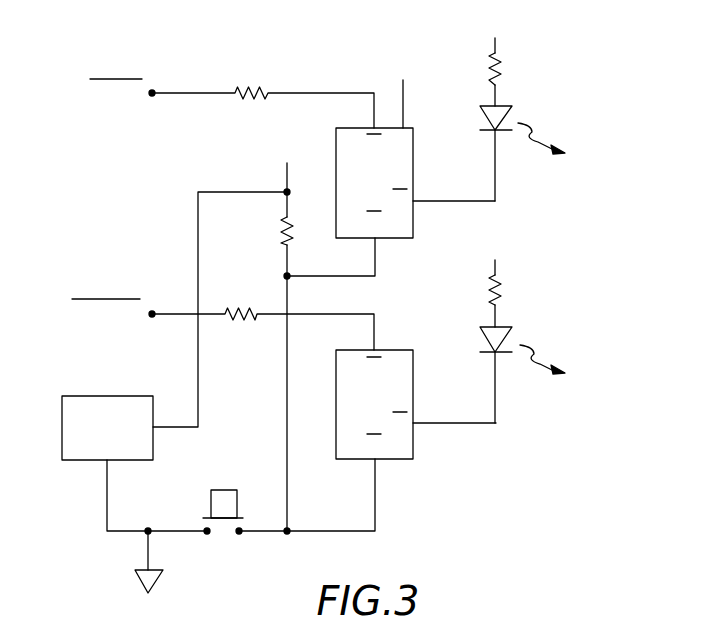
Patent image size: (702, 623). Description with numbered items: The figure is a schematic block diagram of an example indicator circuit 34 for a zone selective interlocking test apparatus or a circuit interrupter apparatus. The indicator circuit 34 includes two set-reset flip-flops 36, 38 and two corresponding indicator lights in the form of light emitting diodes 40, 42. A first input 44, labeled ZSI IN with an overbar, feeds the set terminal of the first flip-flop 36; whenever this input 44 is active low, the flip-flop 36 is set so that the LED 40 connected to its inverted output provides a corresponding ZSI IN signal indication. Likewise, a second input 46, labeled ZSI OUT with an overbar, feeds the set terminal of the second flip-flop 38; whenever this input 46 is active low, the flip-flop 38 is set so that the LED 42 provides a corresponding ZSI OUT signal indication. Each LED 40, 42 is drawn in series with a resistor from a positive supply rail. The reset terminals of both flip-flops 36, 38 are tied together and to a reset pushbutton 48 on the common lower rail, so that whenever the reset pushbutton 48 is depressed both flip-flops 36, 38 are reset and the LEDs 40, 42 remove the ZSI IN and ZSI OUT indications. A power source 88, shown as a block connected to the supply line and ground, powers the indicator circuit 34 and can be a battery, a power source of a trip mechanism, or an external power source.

The indicator circuit 34 is at (538, 514).
The set-reset flip-flop 36 is at (407, 239).
The set-reset flip-flop 38 is at (407, 460).
The light emitting diode 40 is at (480, 108).
The light emitting diode 42 is at (480, 331).
The input 44 is at (151, 89).
The input 46 is at (151, 310).
The reset pushbutton 48 is at (218, 488).
The power source 88 is at (62, 412).